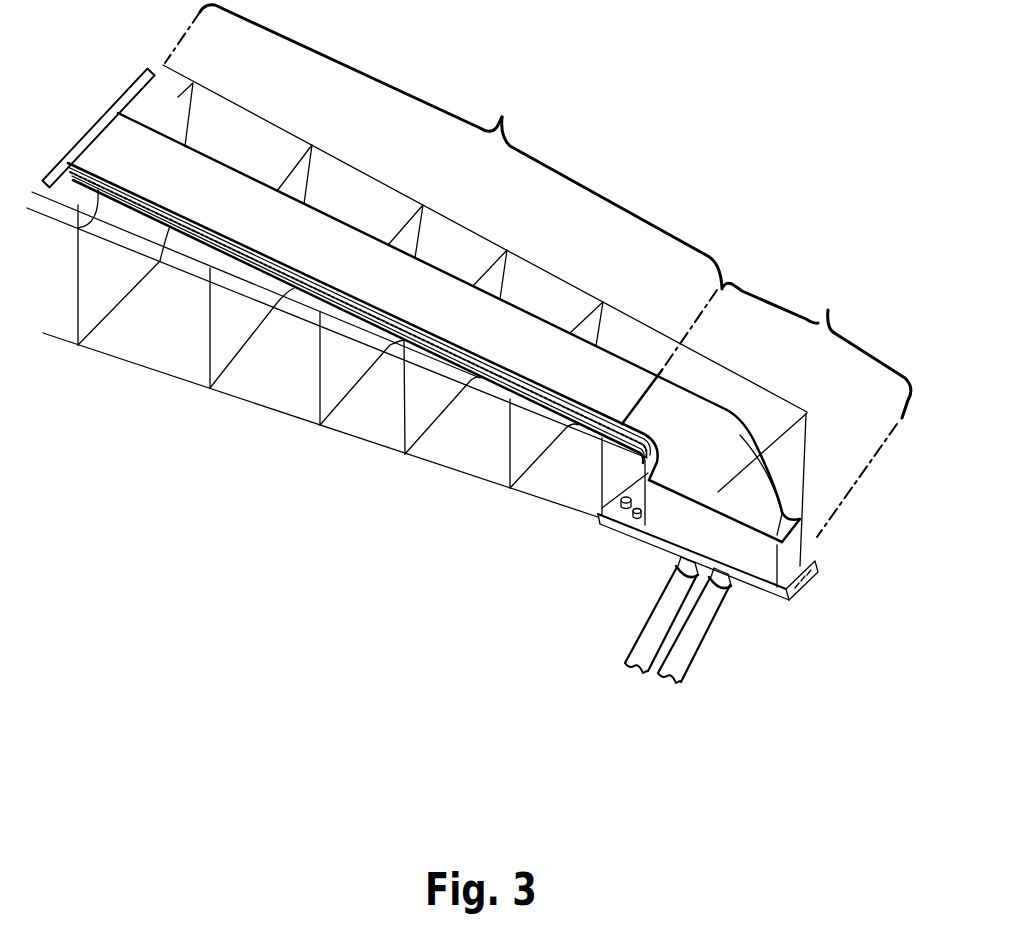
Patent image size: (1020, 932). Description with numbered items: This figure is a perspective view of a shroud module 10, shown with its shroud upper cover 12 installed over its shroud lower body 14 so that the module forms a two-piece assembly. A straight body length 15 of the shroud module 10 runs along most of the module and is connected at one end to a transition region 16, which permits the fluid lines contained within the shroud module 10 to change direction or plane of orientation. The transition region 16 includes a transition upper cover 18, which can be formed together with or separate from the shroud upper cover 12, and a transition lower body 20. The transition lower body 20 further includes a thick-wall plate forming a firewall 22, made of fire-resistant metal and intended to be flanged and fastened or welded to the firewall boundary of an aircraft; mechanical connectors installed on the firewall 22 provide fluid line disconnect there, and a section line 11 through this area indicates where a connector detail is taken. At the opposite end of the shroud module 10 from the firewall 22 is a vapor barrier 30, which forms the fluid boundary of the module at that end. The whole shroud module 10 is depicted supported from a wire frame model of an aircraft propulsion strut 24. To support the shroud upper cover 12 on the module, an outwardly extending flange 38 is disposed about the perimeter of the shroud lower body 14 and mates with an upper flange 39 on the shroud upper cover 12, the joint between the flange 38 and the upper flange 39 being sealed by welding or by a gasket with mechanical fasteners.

The shroud module 10 is at (630, 117).
The section line 11 is at (583, 478).
The shroud upper cover 12 is at (368, 258).
The shroud lower body 14 is at (337, 428).
The straight body length 15 is at (345, 68).
The transition region 16 is at (706, 327).
The transition upper cover 18 is at (752, 458).
The transition lower body 20 is at (799, 497).
The firewall 22 is at (640, 541).
The propulsion strut 24 is at (727, 365).
The vapor barrier 30 is at (118, 93).
The flange 38 is at (80, 225).
The upper flange 39 is at (80, 167).